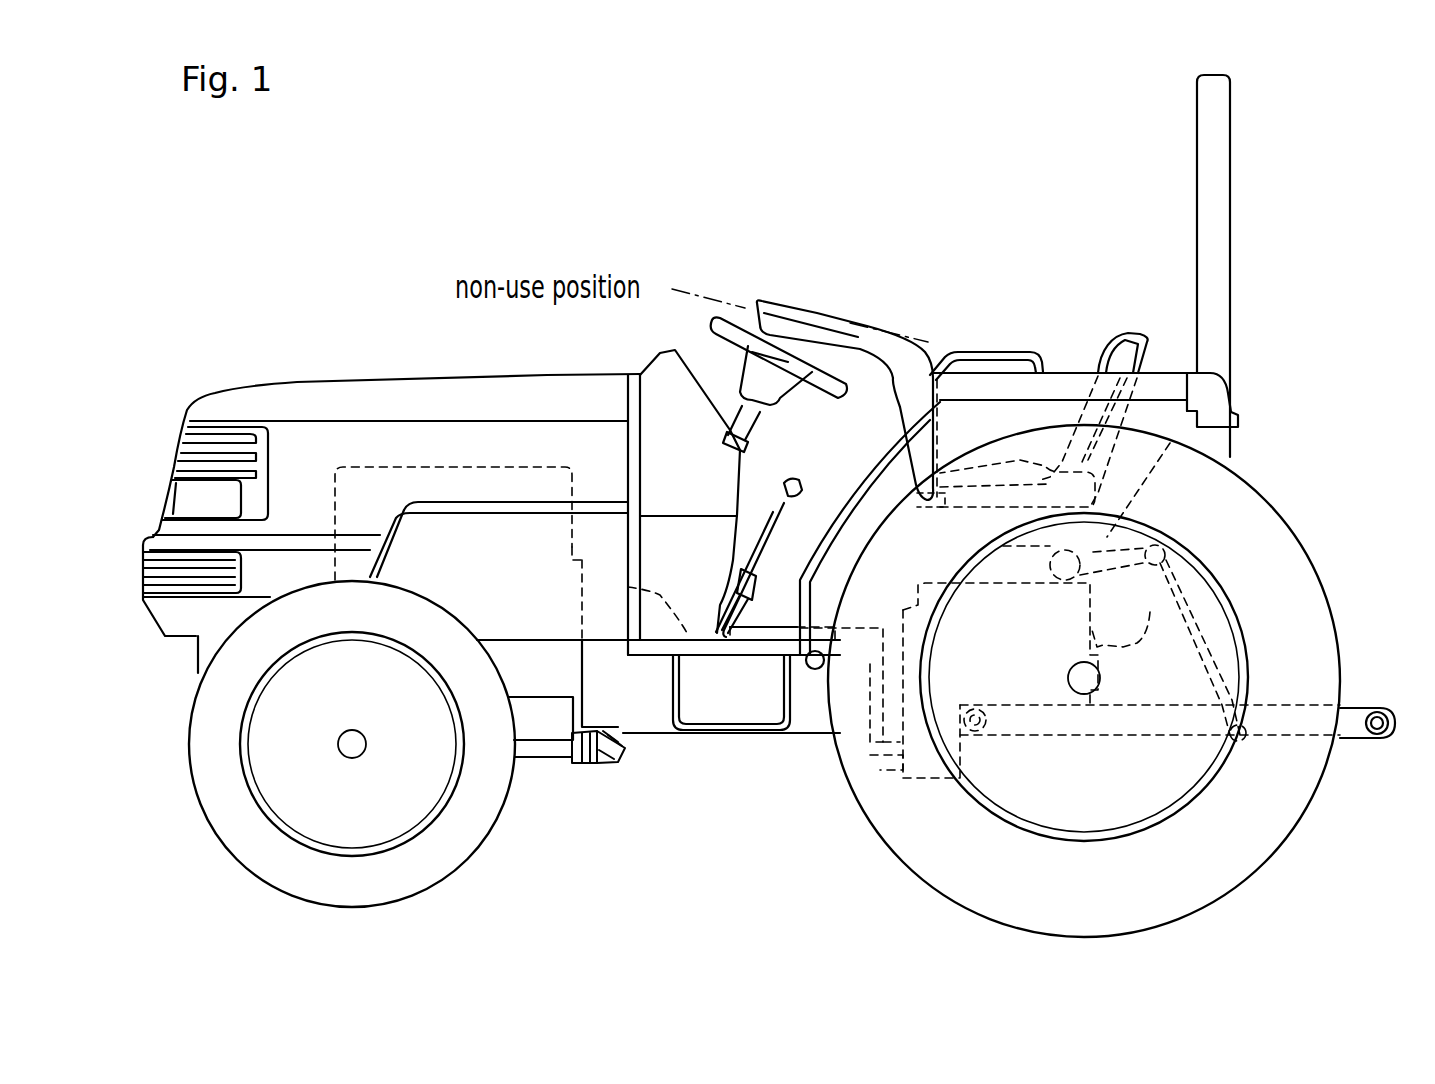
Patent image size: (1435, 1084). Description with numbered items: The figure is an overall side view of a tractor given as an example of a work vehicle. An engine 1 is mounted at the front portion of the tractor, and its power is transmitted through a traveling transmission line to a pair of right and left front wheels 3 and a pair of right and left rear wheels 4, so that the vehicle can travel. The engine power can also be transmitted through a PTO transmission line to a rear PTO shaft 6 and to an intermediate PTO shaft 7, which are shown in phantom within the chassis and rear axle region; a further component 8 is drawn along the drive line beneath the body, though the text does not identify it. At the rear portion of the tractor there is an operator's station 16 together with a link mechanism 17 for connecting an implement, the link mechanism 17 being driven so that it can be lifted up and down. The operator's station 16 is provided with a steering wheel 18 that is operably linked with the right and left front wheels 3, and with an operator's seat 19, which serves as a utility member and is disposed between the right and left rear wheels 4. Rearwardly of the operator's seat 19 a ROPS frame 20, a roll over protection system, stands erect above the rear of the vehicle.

The engine 1 is at (401, 470).
The front wheels 3 is at (235, 842).
The rear wheels 4 is at (908, 862).
The rear PTO shaft 6 is at (1124, 592).
The intermediate PTO shaft 7 is at (878, 770).
The propeller shaft joint 8 is at (599, 712).
The operator's station 16 is at (880, 303).
The link mechanism 17 is at (1355, 745).
The steering wheel 18 is at (808, 393).
The operator's seat 19 is at (1105, 357).
The ROPS frame 20 is at (1225, 200).